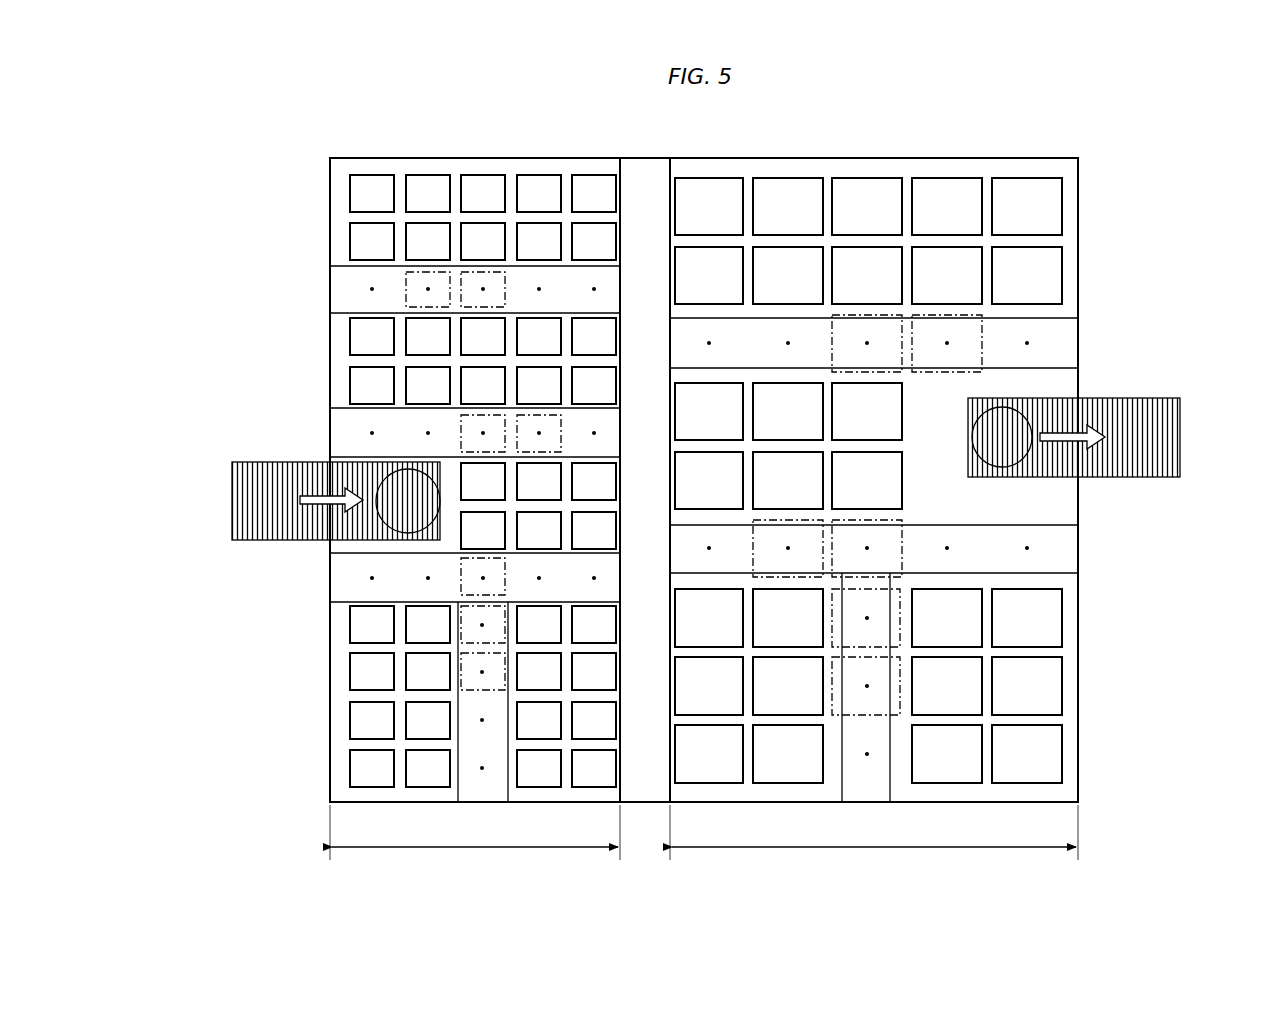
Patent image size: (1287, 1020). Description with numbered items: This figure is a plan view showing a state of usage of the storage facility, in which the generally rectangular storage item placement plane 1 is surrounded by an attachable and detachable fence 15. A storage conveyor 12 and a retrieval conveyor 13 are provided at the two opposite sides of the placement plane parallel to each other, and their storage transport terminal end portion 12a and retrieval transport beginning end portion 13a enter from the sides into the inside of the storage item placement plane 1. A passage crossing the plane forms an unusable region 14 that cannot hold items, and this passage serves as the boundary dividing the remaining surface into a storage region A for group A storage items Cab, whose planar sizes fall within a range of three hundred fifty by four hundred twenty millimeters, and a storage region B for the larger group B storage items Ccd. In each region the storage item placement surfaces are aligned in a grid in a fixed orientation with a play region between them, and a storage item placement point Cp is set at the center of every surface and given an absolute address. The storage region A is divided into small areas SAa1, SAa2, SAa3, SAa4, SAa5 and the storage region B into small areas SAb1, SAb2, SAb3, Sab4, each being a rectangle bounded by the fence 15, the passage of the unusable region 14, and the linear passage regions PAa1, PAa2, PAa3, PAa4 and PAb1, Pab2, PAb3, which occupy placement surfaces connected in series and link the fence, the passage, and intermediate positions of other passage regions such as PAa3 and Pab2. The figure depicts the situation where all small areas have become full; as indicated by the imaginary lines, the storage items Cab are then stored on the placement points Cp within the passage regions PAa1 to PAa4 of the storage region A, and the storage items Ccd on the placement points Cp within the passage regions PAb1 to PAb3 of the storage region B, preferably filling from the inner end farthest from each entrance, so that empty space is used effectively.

The storage item placement plane 1 is at (828, 185).
The storage conveyor 12 is at (252, 497).
The storage transport terminal end portion 12a is at (380, 475).
The retrieval conveyor 13 is at (1165, 438).
The retrieval transport beginning end portion 13a is at (1025, 462).
The unusable region 14 is at (648, 195).
The fence 15 is at (903, 158).
The group A storage items Cab is at (470, 275).
The group B storage items Ccd is at (1015, 815).
The storage item placement point Cp is at (538, 289).
The small area SAa1 is at (457, 178).
The small area SAa2 is at (352, 358).
The small area SAa3 is at (598, 505).
The small area SAa4 is at (355, 698).
The small area SAa5 is at (568, 770).
The passage region PAa1 is at (345, 292).
The passage region PAa2 is at (393, 420).
The passage region PAa3 is at (345, 580).
The passage region PAa4 is at (490, 787).
The small area SAb1 is at (1068, 210).
The small area SAb2 is at (808, 368).
The small area SAb3 is at (845, 790).
The small area Sab4 is at (1068, 722).
The passage region PAb1 is at (1048, 343).
The passage region Pab2 is at (1052, 555).
The passage region PAb3 is at (887, 752).
The storage region A is at (475, 832).
The storage region B is at (874, 832).